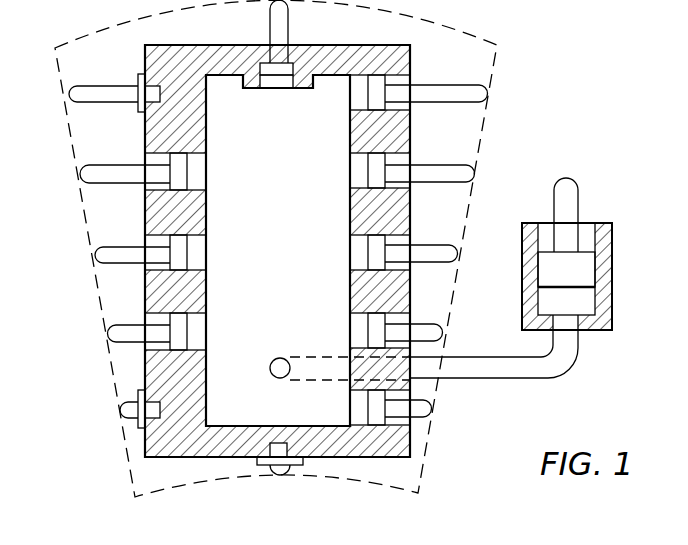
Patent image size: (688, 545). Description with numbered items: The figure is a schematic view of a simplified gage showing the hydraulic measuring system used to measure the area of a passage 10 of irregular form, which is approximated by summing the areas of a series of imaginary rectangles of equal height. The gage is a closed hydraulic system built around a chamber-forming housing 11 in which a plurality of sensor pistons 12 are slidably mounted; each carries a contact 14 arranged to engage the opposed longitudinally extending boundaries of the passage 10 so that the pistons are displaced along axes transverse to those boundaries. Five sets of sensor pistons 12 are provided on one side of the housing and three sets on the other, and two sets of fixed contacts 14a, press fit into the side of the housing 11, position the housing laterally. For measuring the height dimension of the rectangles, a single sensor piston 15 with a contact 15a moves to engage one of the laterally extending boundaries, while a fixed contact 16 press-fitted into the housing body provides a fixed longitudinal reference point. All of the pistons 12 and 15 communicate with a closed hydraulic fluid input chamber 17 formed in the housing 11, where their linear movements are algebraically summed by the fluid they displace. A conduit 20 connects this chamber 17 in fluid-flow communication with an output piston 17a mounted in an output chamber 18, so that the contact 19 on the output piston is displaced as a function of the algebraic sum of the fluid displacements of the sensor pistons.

The passage 10 is at (92, 233).
The chamber-forming housing 11 is at (405, 218).
The sensor pistons 12 is at (372, 93).
The contacts 14 is at (464, 90).
The fixed contacts 14a is at (100, 88).
The sensor piston 15 is at (279, 82).
The contact 15a is at (288, 32).
The fixed contact 16 is at (283, 472).
The hydraulic fluid input chamber 17 is at (289, 216).
The output piston 17a is at (583, 279).
The output chamber 18 is at (522, 291).
The contact 19 is at (576, 202).
The conduit 20 is at (543, 373).